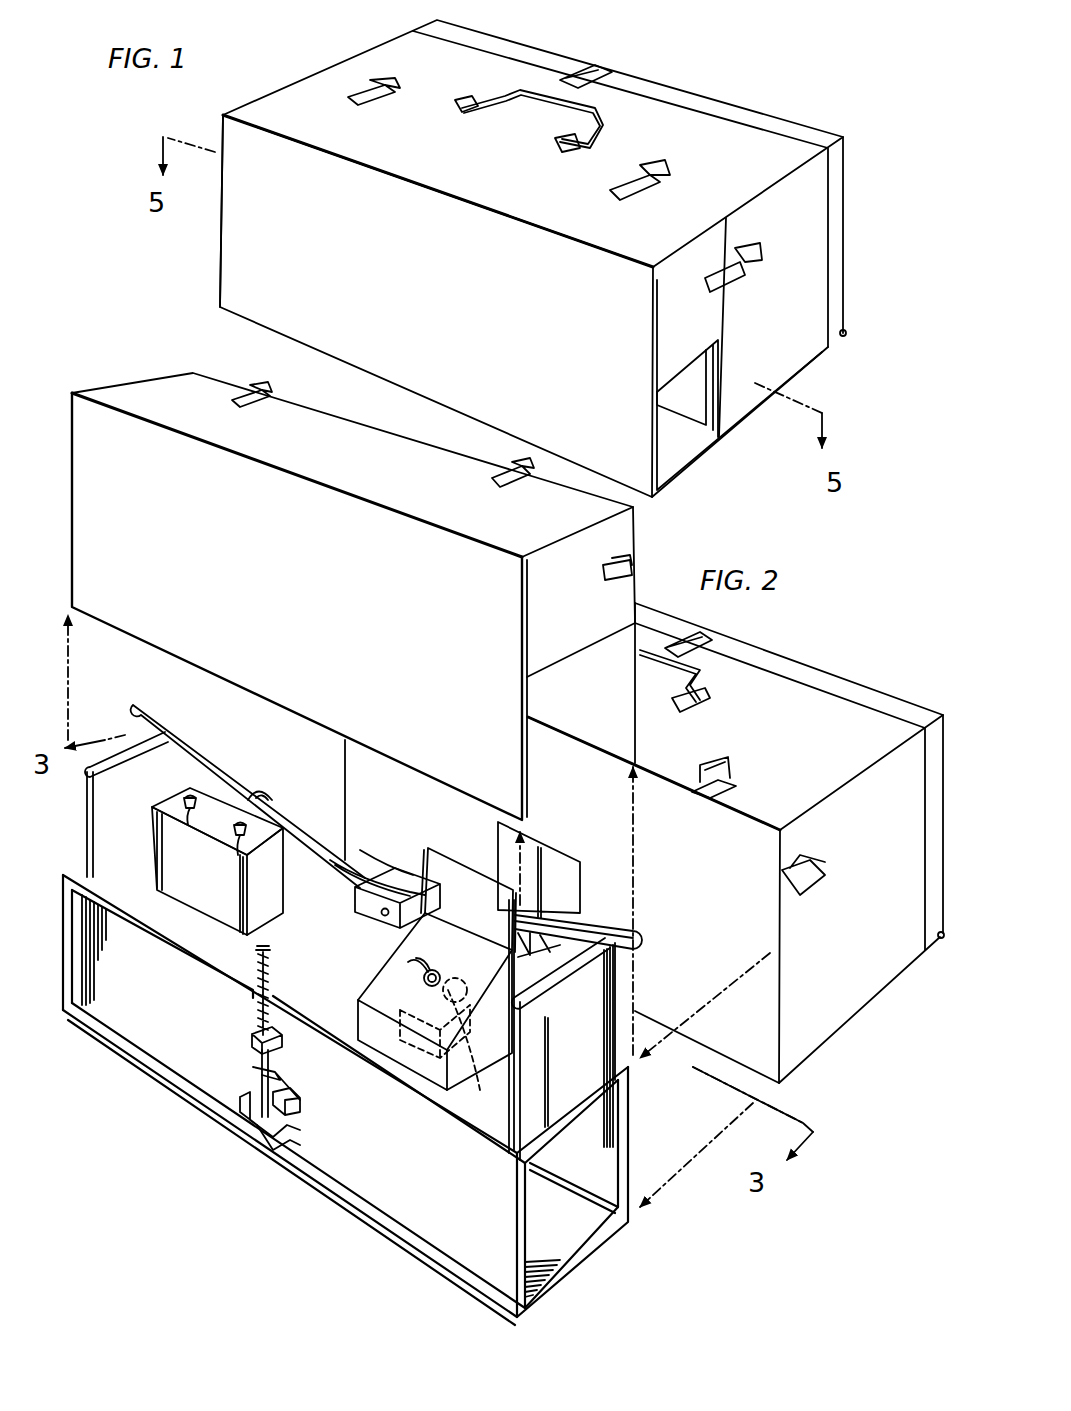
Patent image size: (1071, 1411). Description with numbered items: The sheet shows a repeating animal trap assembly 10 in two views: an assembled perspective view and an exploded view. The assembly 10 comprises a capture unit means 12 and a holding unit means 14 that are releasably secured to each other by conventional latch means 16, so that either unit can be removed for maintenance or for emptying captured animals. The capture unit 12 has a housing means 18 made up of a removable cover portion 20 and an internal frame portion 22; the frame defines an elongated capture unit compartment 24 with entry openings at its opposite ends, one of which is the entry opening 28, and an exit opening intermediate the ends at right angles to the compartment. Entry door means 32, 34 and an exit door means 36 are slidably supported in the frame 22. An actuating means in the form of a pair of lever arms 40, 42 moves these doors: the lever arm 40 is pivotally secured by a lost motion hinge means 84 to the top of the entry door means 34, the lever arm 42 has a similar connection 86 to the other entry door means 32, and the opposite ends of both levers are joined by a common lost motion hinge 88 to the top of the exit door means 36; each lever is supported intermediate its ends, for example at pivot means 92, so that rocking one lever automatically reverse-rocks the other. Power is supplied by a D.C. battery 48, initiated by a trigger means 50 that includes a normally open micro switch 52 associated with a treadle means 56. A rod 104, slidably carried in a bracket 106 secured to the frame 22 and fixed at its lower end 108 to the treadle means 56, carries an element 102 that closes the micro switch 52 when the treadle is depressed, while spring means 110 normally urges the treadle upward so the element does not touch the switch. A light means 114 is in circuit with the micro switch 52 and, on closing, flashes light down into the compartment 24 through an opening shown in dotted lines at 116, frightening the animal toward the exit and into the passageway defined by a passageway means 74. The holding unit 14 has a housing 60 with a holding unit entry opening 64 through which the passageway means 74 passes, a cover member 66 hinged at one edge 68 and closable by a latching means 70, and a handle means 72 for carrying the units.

In FIG. 1, the repeating animal trap assembly 10 is at (185, 293).
In FIG. 1, the capture unit means 12 is at (302, 322).
In FIG. 1, the holding unit means 14 is at (752, 150).
In FIG. 2, the holding unit means 14 is at (895, 982).
In FIG. 1, the latch means 16 is at (395, 92).
In FIG. 2, the latch means 16 is at (722, 783).
In FIG. 1, the housing means 18 is at (132, 400).
In FIG. 1, the removable cover portion 20 is at (236, 222).
In FIG. 1, the internal frame portion 22 is at (378, 1205).
In FIG. 1, the capture unit compartment 24 is at (704, 408).
In FIG. 1, the entry opening 28 is at (683, 445).
In FIG. 1, the entry door means 32 is at (87, 830).
In FIG. 1, the entry door means 34 is at (590, 1027).
In FIG. 1, the exit door means 36 is at (360, 888).
In FIG. 1, the lever arm 40 is at (565, 920).
In FIG. 1, the lever arm 42 is at (298, 842).
In FIG. 1, the D.C. battery 48 is at (268, 898).
In FIG. 1, the trigger means 50 is at (302, 1107).
In FIG. 1, the micro switch 52 is at (290, 1118).
In FIG. 1, the treadle means 56 is at (273, 1152).
In FIG. 1, the housing 60 is at (800, 242).
In FIG. 2, the housing 60 is at (915, 775).
In FIG. 1, the holding unit entry opening 64 is at (556, 862).
In FIG. 1, the cover member 66 is at (695, 95).
In FIG. 2, the cover member 66 is at (860, 692).
In FIG. 1, the hinged edge 68 is at (847, 330).
In FIG. 2, the hinged edge 68 is at (943, 938).
In FIG. 1, the latching means 70 is at (592, 70).
In FIG. 2, the latching means 70 is at (700, 632).
In FIG. 1, the handle means 72 is at (600, 125).
In FIG. 2, the handle means 72 is at (705, 688).
In FIG. 1, the passageway means 74 is at (408, 872).
In FIG. 1, the lost motion hinge means 84 is at (636, 932).
In FIG. 1, the lost motion hinge connection 86 is at (175, 735).
In FIG. 1, the common lost motion hinge 88 is at (384, 916).
In FIG. 1, the pivot means 92 is at (272, 798).
In FIG. 1, the element 102 is at (270, 1075).
In FIG. 1, the rod 104 is at (262, 1092).
In FIG. 1, the bracket 106 is at (252, 1040).
In FIG. 1, the lower end of rod 108 is at (253, 1120).
In FIG. 1, the spring means 110 is at (270, 975).
In FIG. 1, the light means 114 is at (448, 1000).
In FIG. 1, the opening (light opening) 116 is at (460, 1048).